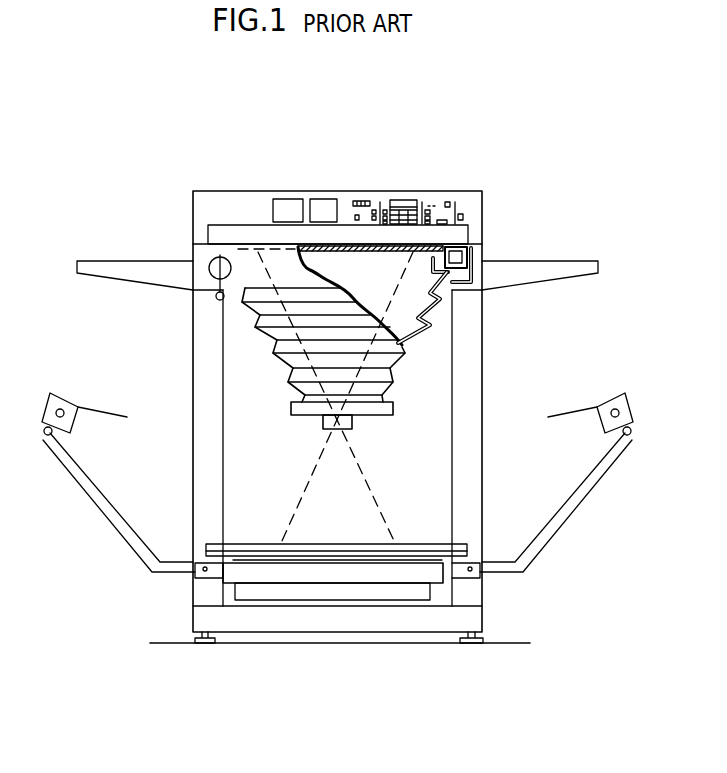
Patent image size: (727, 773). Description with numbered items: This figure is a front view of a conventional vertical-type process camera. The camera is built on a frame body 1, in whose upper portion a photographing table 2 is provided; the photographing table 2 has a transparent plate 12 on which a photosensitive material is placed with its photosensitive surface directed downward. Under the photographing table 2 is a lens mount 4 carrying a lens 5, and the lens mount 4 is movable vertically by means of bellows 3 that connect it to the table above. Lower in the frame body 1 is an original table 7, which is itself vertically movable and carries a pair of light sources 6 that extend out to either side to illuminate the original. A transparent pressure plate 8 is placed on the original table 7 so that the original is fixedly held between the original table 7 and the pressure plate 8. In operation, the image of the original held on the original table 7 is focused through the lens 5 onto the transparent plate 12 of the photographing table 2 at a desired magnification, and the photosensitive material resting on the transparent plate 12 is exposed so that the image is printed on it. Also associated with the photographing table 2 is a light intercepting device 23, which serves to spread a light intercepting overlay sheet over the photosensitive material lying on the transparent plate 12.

The frame body 1 is at (483, 333).
The photographing table 2 is at (249, 243).
The light intercepting device 23 is at (353, 237).
The transparent plate 12 is at (362, 252).
The bellows 3 is at (418, 330).
The lens mount 4 is at (393, 408).
The lens 5 is at (352, 426).
The light sources 6 is at (48, 397).
The original table 7 is at (382, 577).
The transparent pressure plate 8 is at (341, 544).